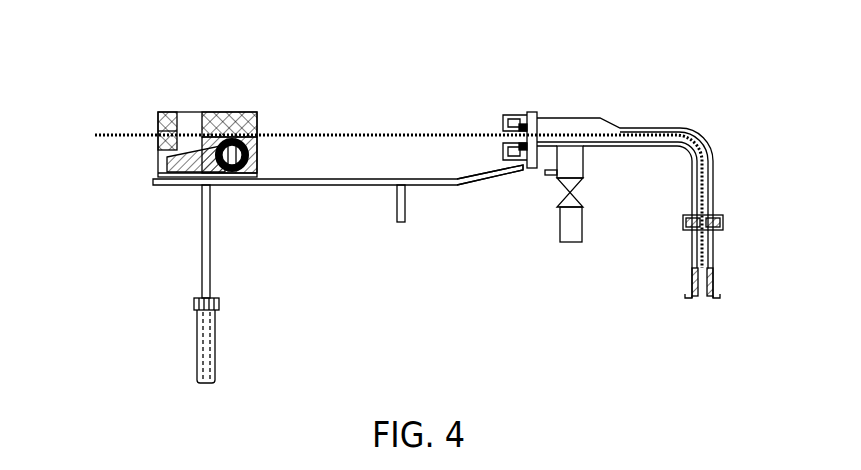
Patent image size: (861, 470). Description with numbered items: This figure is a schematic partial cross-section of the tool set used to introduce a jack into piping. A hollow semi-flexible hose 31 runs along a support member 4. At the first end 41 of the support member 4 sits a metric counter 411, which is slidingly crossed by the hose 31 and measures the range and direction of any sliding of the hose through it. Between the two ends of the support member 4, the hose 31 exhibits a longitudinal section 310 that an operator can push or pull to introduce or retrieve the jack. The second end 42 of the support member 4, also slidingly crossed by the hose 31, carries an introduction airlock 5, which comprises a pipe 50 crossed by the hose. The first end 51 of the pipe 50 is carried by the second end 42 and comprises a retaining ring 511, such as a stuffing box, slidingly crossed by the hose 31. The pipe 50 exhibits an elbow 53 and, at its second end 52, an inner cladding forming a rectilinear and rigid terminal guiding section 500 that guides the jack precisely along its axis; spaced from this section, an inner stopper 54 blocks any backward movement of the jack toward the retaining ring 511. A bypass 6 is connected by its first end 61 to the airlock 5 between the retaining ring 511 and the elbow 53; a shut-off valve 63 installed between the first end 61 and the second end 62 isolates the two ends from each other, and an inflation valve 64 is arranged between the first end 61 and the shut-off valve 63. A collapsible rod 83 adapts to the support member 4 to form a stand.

The hollow semi-flexible hose 31 is at (96, 116).
The metric counter 411 is at (232, 113).
The first end of the support member 41 is at (187, 183).
The longitudinal section of the hose 310 is at (388, 130).
The support member 4 is at (322, 197).
The second end of the support member 42 is at (495, 170).
The collapsible rod 83 is at (197, 340).
The first end of the pipe 51 is at (541, 120).
The retaining ring 511 is at (522, 120).
The pipe 50 is at (632, 128).
The introduction airlock 5 is at (668, 108).
The elbow 53 is at (710, 145).
The inner stopper 54 is at (724, 222).
The terminal guiding section 500 is at (717, 280).
The second end of the pipe 52 is at (688, 300).
The bypass 6 is at (544, 255).
The first end of the bypass 61 is at (585, 160).
The shut-off valve 63 is at (596, 197).
The second end of the bypass 62 is at (583, 237).
The inflation valve 64 is at (547, 173).